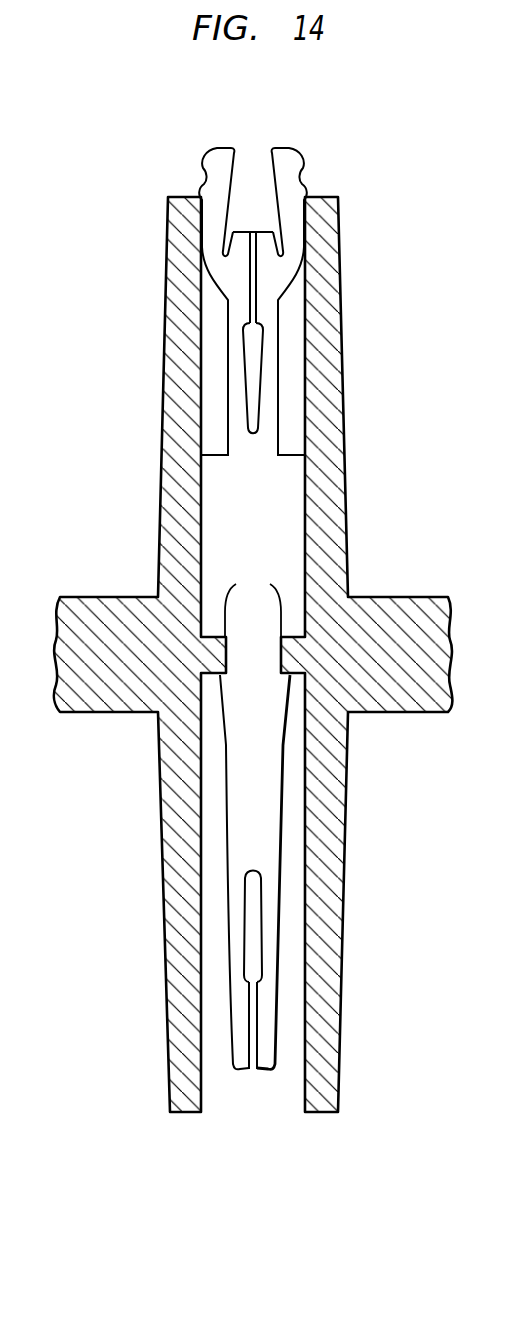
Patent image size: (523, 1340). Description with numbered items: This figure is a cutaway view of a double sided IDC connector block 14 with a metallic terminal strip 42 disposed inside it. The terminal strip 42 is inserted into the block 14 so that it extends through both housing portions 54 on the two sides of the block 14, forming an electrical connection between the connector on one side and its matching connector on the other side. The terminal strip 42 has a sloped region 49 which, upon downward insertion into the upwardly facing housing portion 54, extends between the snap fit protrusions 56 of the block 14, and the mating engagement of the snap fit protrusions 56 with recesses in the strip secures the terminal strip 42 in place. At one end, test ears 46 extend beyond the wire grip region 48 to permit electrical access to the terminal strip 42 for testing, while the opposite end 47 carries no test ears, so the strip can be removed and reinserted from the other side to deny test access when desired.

The connector block 14 is at (91, 606).
The housing portion 54 is at (328, 382).
The metallic terminal strip 42 is at (215, 492).
The test ears 46 is at (279, 146).
The wire grip region 48 is at (253, 231).
The snap fit protrusion 56 is at (253, 600).
The sloped region 49 is at (215, 703).
The opposite end 47 is at (238, 1009).